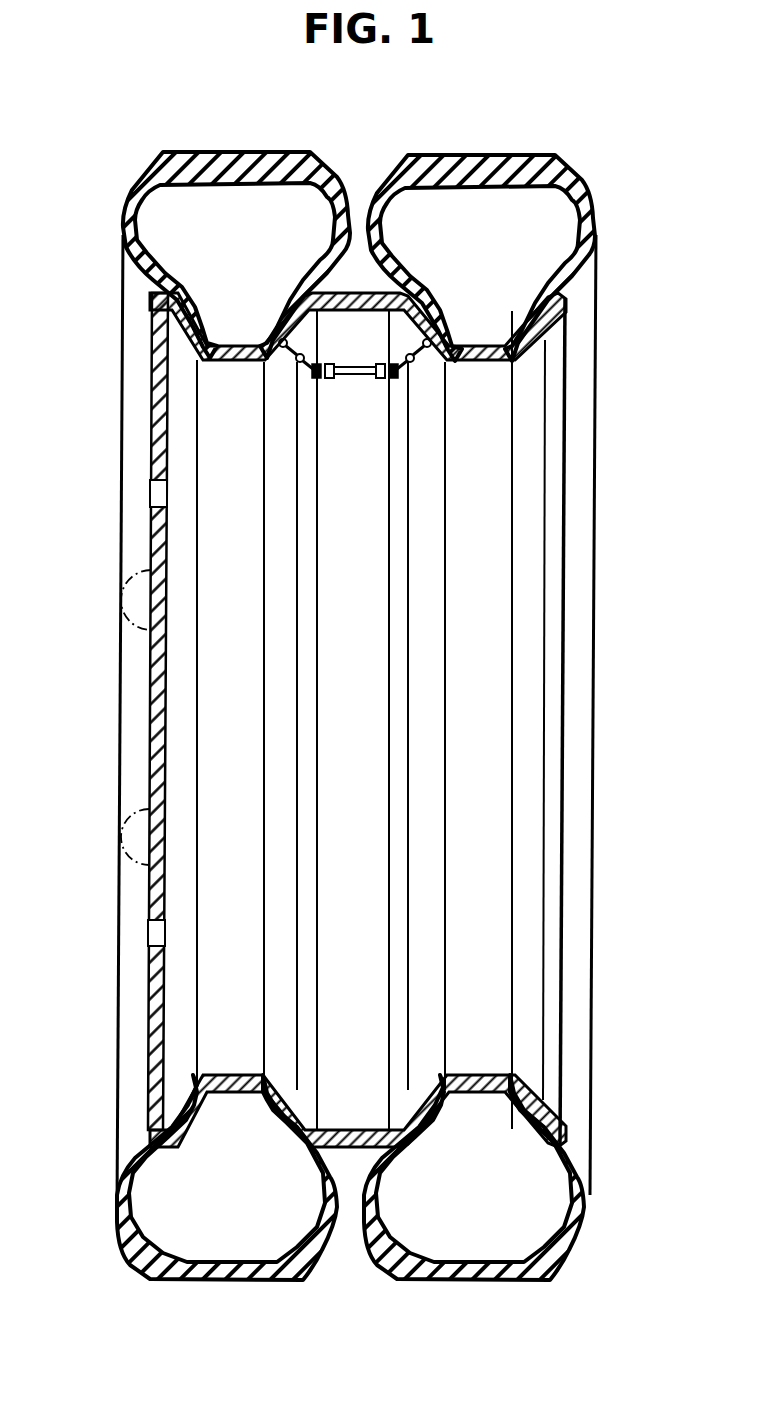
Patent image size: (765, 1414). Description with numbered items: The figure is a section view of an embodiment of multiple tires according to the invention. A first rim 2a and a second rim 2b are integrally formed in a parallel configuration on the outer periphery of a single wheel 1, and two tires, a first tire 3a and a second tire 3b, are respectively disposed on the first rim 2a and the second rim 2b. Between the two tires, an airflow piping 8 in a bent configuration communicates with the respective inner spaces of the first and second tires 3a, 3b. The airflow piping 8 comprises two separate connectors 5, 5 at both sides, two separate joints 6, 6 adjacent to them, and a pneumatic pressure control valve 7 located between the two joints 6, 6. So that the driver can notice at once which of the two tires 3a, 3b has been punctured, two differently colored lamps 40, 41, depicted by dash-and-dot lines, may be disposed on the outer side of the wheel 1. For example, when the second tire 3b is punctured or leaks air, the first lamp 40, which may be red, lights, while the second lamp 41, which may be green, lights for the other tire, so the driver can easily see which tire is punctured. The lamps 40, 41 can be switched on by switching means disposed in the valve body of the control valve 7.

The wheel 1 is at (150, 1020).
The first rim 2a is at (553, 313).
The second rim 2b is at (158, 316).
The first tire 3a is at (490, 153).
The second tire 3b is at (233, 152).
The connector 5 is at (282, 352).
The joint 6 is at (310, 376).
The pneumatic pressure control valve 7 is at (355, 416).
The airflow piping 8 is at (357, 429).
The first lamp 40 is at (125, 603).
The second lamp 41 is at (122, 837).